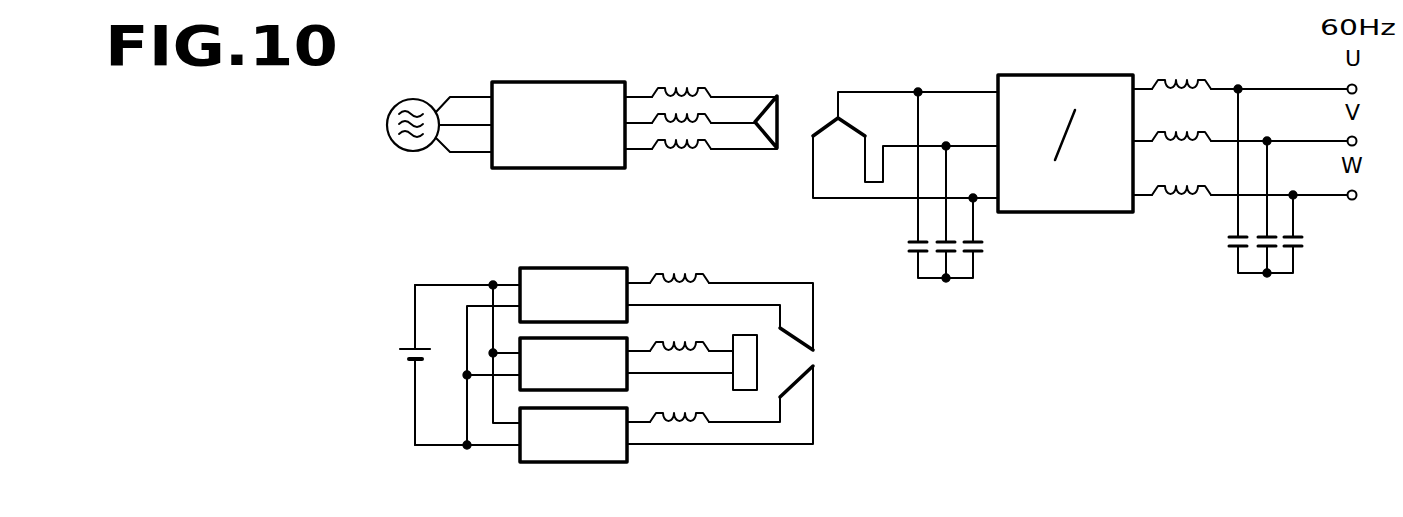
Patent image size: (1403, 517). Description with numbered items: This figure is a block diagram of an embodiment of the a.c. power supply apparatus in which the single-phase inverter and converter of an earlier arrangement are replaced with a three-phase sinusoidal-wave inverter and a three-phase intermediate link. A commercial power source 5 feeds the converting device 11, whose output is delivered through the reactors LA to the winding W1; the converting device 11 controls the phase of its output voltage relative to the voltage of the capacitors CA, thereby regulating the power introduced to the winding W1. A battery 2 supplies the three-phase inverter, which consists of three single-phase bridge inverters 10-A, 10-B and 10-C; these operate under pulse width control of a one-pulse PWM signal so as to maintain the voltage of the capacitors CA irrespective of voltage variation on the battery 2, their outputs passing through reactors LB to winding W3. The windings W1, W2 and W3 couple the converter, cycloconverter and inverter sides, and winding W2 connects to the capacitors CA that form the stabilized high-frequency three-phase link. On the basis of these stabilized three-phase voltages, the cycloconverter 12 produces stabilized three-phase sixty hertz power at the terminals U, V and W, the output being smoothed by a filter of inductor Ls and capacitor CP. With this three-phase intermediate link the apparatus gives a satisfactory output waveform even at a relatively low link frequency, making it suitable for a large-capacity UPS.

The battery 2 is at (393, 357).
The commercial power source 5 is at (414, 99).
The converting device 11 is at (569, 82).
The cycloconverter 12 is at (1077, 75).
The single-phase bridge inverter 10-A is at (545, 268).
The single-phase bridge inverter 10-B is at (628, 338).
The single-phase bridge inverter 10-C is at (628, 408).
The reactors LA is at (668, 104).
The reactors LB is at (668, 334).
The inductor Ls is at (1172, 123).
The capacitors CA is at (928, 187).
The capacitor CP is at (1248, 183).
The winding W1 is at (744, 105).
The winding W2 (star) W2 is at (905, 131).
The winding W3 is at (741, 363).